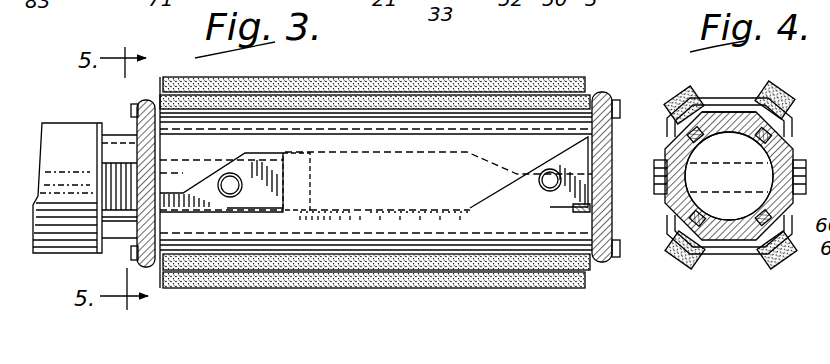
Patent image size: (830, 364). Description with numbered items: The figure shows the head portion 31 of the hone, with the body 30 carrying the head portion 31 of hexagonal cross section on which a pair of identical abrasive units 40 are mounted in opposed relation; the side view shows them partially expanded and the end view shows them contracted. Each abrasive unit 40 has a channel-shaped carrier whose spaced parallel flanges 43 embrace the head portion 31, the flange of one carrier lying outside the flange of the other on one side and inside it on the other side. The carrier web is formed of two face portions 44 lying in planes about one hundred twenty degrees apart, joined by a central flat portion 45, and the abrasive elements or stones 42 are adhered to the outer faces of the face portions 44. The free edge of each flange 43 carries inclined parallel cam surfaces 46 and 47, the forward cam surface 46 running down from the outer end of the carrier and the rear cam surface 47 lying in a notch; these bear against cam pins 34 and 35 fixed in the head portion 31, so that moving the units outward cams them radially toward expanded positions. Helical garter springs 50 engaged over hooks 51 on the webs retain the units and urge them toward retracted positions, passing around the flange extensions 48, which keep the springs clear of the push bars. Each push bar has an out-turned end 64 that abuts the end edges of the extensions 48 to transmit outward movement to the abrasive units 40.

In FIG. 3, the body 30 is at (449, 190).
In FIG. 4, the body 30 is at (730, 212).
In FIG. 3, the head portion 31 is at (583, 186).
In FIG. 4, the head portion 31 is at (729, 176).
In FIG. 3, the cam pin 34 is at (552, 163).
In FIG. 4, the cam pin 34 is at (796, 180).
In FIG. 3, the cam pin 35 is at (247, 183).
In FIG. 4, the abrasive unit 40 is at (741, 94).
In FIG. 3, the abrasive element 42 is at (385, 84).
In FIG. 4, the abrasive element 42 is at (792, 101).
In FIG. 3, the flange 43 is at (480, 177).
In FIG. 4, the face portion 44 is at (675, 126).
In FIG. 4, the central flat portion 45 is at (724, 98).
In FIG. 3, the cam surface 46 is at (602, 164).
In FIG. 3, the cam surface 47 is at (210, 192).
In FIG. 3, the extension 48 is at (162, 187).
In FIG. 3, the garter spring 50 is at (147, 101).
In FIG. 4, the garter spring 50 is at (792, 144).
In FIG. 3, the hook 51 is at (133, 112).
In FIG. 4, the hook 51 is at (745, 150).
In FIG. 3, the out-turned end 64 is at (128, 179).